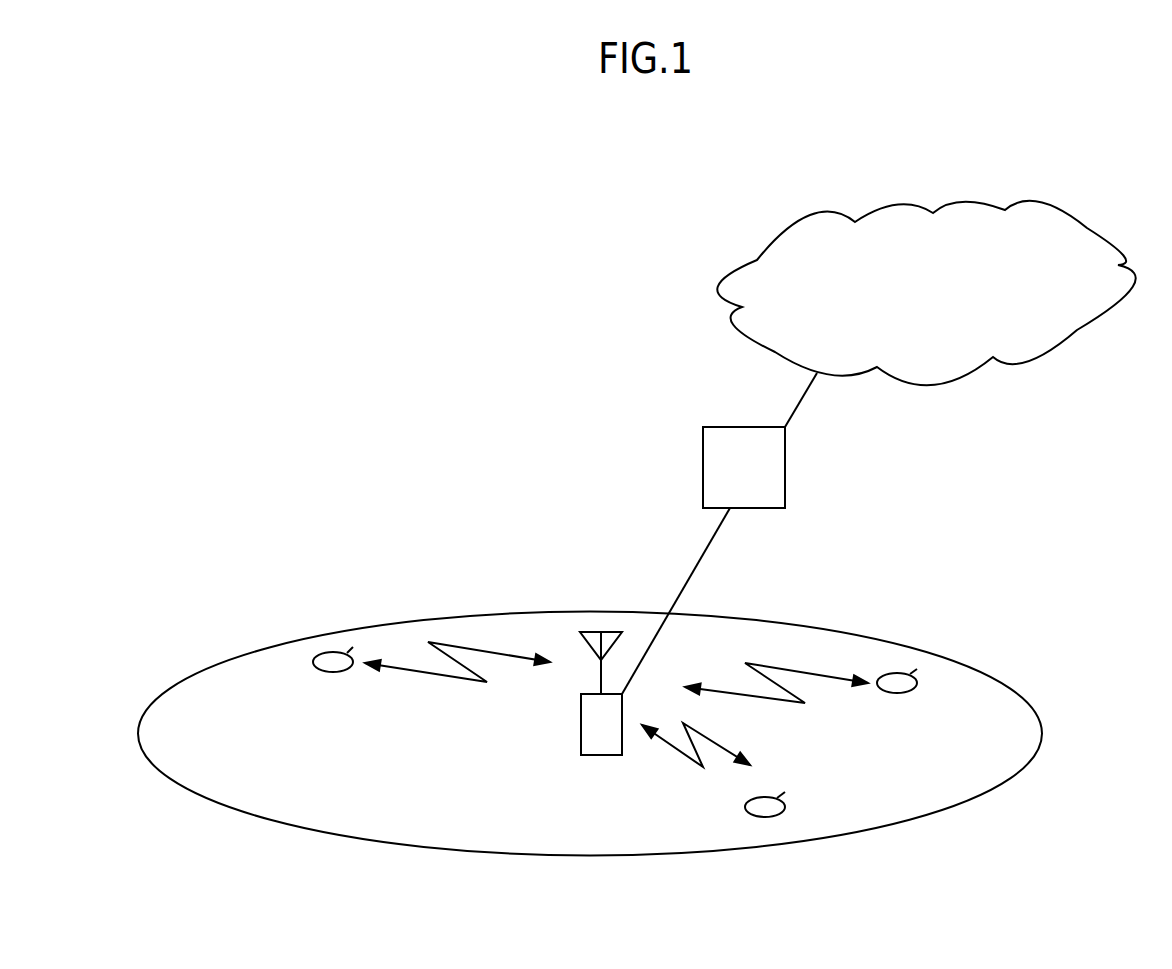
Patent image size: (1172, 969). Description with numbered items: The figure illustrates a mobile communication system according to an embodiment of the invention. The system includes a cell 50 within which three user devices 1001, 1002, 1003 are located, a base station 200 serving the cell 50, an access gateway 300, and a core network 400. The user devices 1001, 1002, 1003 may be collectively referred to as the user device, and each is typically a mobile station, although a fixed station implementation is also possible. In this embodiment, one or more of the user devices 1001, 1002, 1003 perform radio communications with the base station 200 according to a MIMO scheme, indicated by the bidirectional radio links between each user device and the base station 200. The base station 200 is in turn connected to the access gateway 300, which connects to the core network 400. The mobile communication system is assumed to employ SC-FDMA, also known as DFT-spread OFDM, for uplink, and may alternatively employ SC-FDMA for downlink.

The cell 50 is at (877, 832).
The core network 400 is at (977, 200).
The access gateway 300 is at (785, 465).
The base station 200 is at (581, 733).
The user device 1001 is at (330, 672).
The user device 1002 is at (747, 803).
The user device 1003 is at (900, 694).